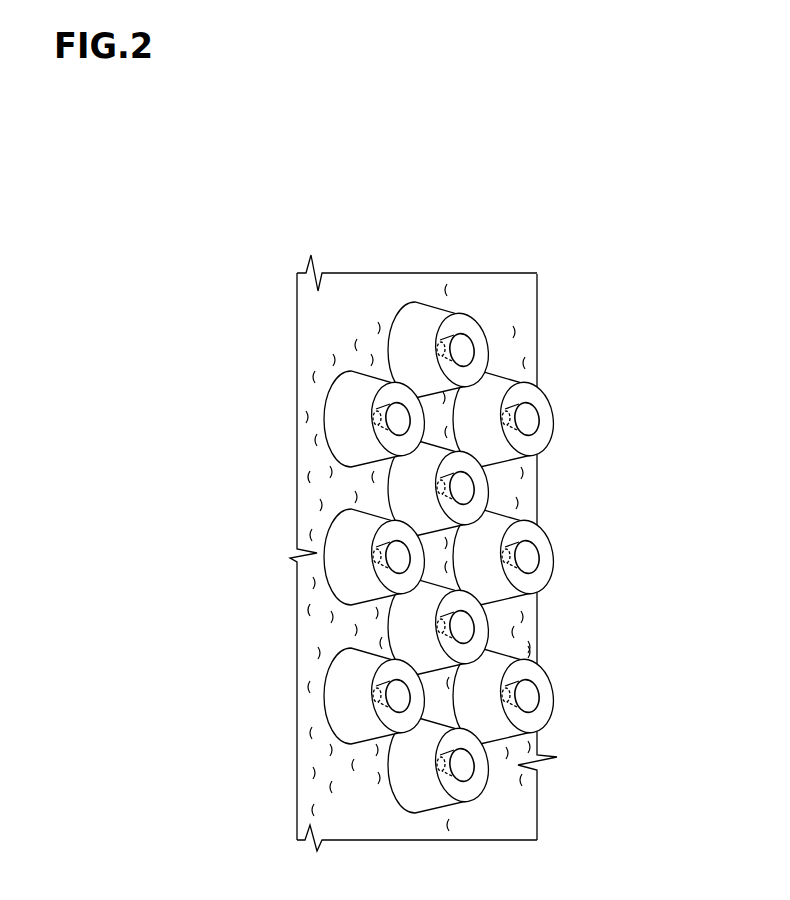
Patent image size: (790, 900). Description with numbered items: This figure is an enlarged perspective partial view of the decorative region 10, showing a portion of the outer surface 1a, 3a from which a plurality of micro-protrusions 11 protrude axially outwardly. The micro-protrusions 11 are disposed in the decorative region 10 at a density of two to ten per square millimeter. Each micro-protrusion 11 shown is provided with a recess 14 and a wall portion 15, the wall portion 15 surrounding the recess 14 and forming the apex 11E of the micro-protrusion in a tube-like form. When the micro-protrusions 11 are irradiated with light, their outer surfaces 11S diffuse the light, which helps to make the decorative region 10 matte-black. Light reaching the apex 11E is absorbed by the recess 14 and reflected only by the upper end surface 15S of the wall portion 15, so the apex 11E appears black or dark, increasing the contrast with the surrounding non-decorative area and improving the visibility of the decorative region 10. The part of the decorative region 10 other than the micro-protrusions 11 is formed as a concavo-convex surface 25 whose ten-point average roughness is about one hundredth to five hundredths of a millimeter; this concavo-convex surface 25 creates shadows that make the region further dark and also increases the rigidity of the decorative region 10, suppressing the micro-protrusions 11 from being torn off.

The decorative region 10 is at (544, 226).
The surface of sheet 1a is at (338, 333).
The outer surface 3a is at (418, 557).
The concavo-convex surface 25 is at (305, 478).
The micro-protrusion 11 is at (494, 378).
The outer surface of micro-protrusion 11S is at (497, 508).
The apex of micro-protrusion 11E is at (568, 574).
The wall portion 15 is at (520, 400).
The upper end surface of wall portion 15S is at (538, 545).
The recess 14 is at (517, 417).